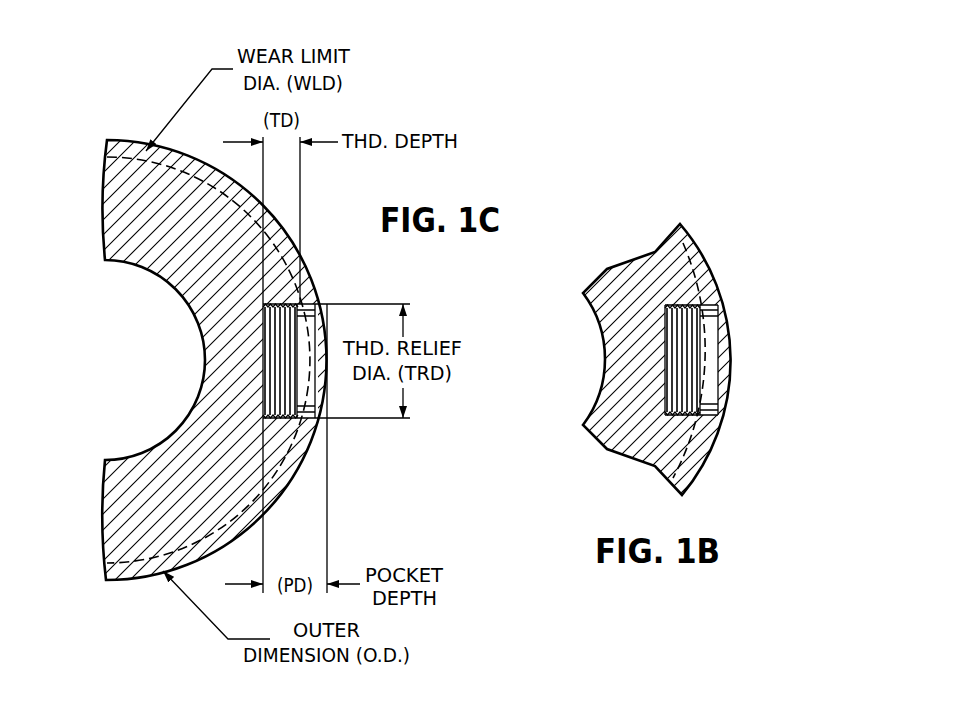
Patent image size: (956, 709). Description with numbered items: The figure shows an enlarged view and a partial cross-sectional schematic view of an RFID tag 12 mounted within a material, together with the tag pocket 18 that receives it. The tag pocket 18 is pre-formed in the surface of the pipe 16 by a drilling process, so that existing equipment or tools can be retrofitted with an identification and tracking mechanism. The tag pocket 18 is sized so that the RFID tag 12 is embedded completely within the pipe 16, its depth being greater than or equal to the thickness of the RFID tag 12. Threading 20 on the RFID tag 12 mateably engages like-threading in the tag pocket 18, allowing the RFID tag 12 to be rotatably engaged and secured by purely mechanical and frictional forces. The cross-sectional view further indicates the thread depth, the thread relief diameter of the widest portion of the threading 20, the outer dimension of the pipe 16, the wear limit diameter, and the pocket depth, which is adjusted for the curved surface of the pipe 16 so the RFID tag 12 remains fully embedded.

The RFID tag 12 is at (717, 410).
The pipe 16 is at (685, 248).
The tag pocket 18 is at (735, 370).
The threading 20 is at (686, 305).